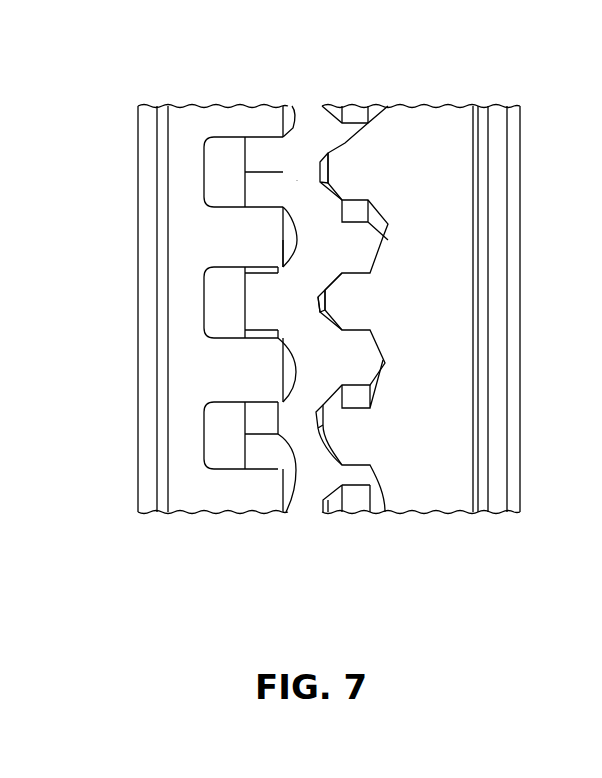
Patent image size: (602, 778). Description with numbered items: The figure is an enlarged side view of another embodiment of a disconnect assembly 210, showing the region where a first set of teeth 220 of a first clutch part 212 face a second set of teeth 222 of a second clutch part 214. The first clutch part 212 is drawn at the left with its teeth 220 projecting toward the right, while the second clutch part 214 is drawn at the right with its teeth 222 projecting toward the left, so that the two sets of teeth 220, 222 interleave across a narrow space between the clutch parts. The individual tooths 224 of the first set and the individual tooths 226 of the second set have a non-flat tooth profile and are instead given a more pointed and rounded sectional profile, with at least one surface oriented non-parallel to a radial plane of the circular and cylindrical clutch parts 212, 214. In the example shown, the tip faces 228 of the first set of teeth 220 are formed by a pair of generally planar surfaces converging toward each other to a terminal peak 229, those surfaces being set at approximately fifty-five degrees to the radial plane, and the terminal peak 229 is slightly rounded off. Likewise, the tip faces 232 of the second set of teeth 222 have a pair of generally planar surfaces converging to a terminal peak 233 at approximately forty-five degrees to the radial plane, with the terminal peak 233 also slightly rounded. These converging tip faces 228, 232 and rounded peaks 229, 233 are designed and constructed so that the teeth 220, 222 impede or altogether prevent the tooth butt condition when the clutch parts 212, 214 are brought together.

The disconnect assembly 210 is at (133, 198).
The first clutch part 212 is at (193, 509).
The second clutch part 214 is at (425, 509).
The first set of teeth 220 is at (254, 509).
The second set of teeth 222 is at (349, 509).
The tooth 224 is at (267, 237).
The tooth 226 is at (348, 172).
The tip face 228 is at (303, 243).
The terminal peak 229 is at (298, 252).
The tip face 232 is at (321, 309).
The terminal peak 233 is at (304, 306).